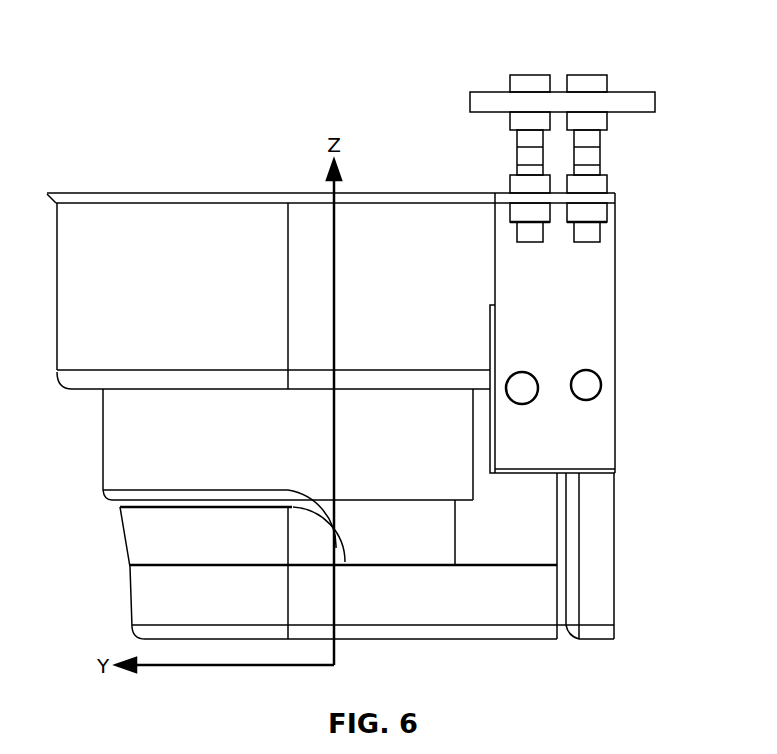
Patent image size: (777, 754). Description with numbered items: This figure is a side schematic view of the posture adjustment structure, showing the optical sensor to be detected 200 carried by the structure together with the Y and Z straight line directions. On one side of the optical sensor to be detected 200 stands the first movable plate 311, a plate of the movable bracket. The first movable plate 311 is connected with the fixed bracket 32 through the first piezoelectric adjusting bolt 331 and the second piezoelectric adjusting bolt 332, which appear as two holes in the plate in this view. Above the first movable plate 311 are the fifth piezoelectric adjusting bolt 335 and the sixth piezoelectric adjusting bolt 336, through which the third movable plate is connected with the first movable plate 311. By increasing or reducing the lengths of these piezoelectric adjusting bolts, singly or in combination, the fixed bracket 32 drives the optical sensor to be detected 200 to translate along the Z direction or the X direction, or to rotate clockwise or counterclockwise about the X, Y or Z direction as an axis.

The optical sensor to be detected 200 is at (331, 379).
The first movable plate 311 is at (591, 333).
The fixed bracket 32 is at (628, 556).
The first piezoelectric adjusting bolt 331 is at (599, 346).
The second piezoelectric adjusting bolt 332 is at (631, 370).
The fifth piezoelectric adjusting bolt 335 is at (501, 130).
The sixth piezoelectric adjusting bolt 336 is at (619, 130).